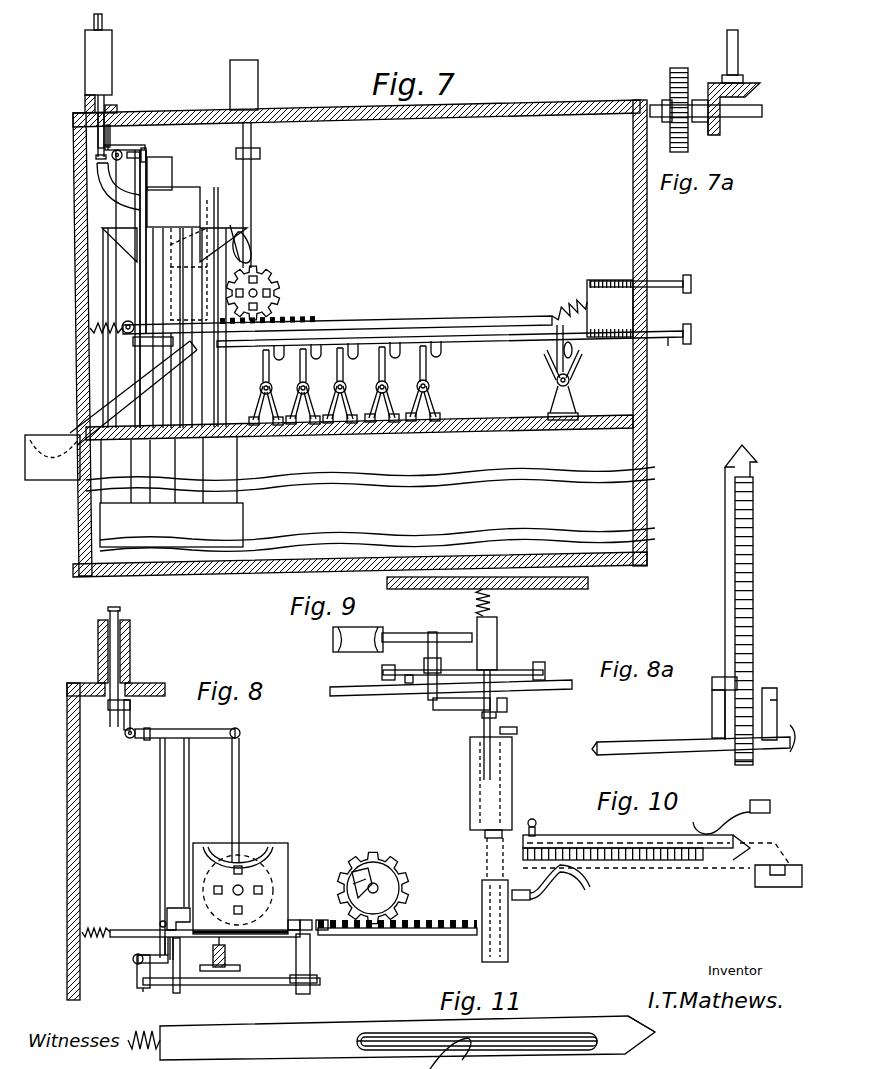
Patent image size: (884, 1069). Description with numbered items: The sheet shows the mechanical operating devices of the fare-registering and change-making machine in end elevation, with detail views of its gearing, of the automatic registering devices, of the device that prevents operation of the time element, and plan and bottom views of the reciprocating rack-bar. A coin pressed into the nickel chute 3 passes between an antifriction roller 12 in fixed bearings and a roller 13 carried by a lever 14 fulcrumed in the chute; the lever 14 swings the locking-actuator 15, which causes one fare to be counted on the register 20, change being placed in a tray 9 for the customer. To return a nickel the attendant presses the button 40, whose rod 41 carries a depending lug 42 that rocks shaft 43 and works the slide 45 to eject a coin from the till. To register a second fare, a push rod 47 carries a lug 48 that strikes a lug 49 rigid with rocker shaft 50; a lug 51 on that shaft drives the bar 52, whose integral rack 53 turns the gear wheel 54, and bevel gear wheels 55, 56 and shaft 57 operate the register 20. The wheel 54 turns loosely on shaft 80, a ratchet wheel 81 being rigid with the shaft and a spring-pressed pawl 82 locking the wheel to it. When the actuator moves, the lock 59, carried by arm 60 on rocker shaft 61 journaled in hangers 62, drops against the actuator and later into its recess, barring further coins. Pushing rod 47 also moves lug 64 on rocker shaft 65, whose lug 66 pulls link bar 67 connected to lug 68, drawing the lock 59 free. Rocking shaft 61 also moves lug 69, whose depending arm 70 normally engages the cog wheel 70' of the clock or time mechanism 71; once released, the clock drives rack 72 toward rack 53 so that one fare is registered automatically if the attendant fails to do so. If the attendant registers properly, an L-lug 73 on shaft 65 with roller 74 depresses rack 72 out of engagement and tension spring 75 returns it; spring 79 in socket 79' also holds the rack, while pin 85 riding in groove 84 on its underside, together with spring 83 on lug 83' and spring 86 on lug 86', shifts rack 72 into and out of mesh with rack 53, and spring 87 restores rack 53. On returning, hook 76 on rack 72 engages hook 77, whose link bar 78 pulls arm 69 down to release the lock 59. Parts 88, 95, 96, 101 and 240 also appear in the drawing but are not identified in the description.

In FIG. 7, the coin receiving chute 3 is at (112, 72).
In FIG. 7, the tray 9 is at (30, 478).
In FIG. 7, the antifriction roller 12 is at (103, 24).
In FIG. 8, the antifriction roller 13 is at (121, 618).
In FIG. 9, the antifriction roller 13 is at (360, 631).
In FIG. 8, the lever 14 is at (100, 648).
In FIG. 7, the locking-actuator 15 is at (105, 128).
In FIG. 8, the locking-actuator 15 is at (103, 686).
In FIG. 9, the locking-actuator 15 is at (415, 632).
In FIG. 7, the register 20 is at (259, 80).
In FIG. 7, the button 40 is at (692, 333).
In FIG. 7, the rod 41 is at (668, 346).
In FIG. 7, the depending lug 42 is at (283, 356).
In FIG. 7, the rocker shaft 43 is at (262, 395).
In FIG. 9, the slide 45 is at (492, 604).
In FIG. 8, the push rod 47 is at (268, 986).
In FIG. 7, the lug 48 is at (573, 349).
In FIG. 7, the lug 49 is at (580, 360).
In FIG. 7, the rocker shaft 50 is at (570, 381).
In FIG. 7, the lug 51 is at (558, 312).
In FIG. 7, the bar 52 is at (442, 335).
In FIG. 7, the rack 53 is at (305, 318).
In FIG. 8, the rack 53 is at (457, 937).
In FIG. 10, the rack 53 is at (770, 888).
In FIG. 7, the gear wheel 54 is at (270, 284).
In FIG. 7A, the gear wheel 54 is at (672, 78).
In FIG. 8, the gear wheel 54 is at (404, 862).
In FIG. 7, the bevel gear wheel 55 is at (276, 293).
In FIG. 7A, the bevel gear wheel 55 is at (714, 136).
In FIG. 7, the bevel gear wheel 56 is at (253, 246).
In FIG. 7A, the bevel gear wheel 56 is at (748, 85).
In FIG. 7, the shaft 57 is at (252, 207).
In FIG. 7A, the shaft 57 is at (739, 52).
In FIG. 7, the lock 59 is at (112, 126).
In FIG. 8, the lock 59 is at (118, 712).
In FIG. 9, the lock 59 is at (427, 657).
In FIG. 7, the arm 60 is at (144, 146).
In FIG. 8, the arm 60 is at (133, 718).
In FIG. 7, the rocker shaft 61 is at (128, 151).
In FIG. 8, the rocker shaft 61 is at (126, 738).
In FIG. 9, the rocker shaft 61 is at (408, 683).
In FIG. 9, the hangers 62 is at (381, 672).
In FIG. 8, the lug 64 is at (137, 973).
In FIG. 8, the rocker shaft 65 is at (133, 959).
In FIG. 9, the rocker shaft 65 is at (352, 696).
In FIG. 8A, the rocker shaft 65 is at (652, 750).
In FIG. 8, the lug 66 is at (142, 988).
In FIG. 8A, the lug 66 is at (793, 752).
In FIG. 7, the link bar 67 is at (135, 167).
In FIG. 8, the link bar 67 is at (159, 839).
In FIG. 8A, the link bar 67 is at (772, 690).
In FIG. 8, the lug 68 is at (150, 740).
In FIG. 9, the lug 68 is at (434, 709).
In FIG. 8, the lug 69 is at (218, 731).
In FIG. 9, the lug 69 is at (486, 720).
In FIG. 7, the depending arm 70 is at (177, 193).
In FIG. 8, the depending arm 70 is at (252, 800).
In FIG. 8, the cog wheel 70' is at (260, 837).
In FIG. 7, the time mechanism 71 is at (255, 228).
In FIG. 8, the time mechanism 71 is at (289, 851).
In FIG. 9, the time mechanism 71 is at (513, 768).
In FIG. 7, the rack 72 is at (88, 331).
In FIG. 8, the rack 72 is at (304, 920).
In FIG. 10, the rack 72 is at (700, 847).
In FIG. 8A, the rack 72 is at (735, 568).
In FIG. 11, the rack 72 is at (626, 1018).
In FIG. 8, the L-lug 73 is at (160, 948).
In FIG. 8A, the L-lug 73 is at (713, 725).
In FIG. 8, the roller 74 is at (165, 960).
In FIG. 8A, the roller 74 is at (726, 677).
In FIG. 8, the tension spring 75 is at (88, 930).
In FIG. 11, the tension spring 75 is at (152, 1030).
In FIG. 8, the lug 76 is at (159, 923).
In FIG. 9, the lug 76 is at (513, 731).
In FIG. 10, the lug 76 is at (537, 826).
In FIG. 8, the hook 77 is at (180, 907).
In FIG. 7, the link bar 78 is at (142, 176).
In FIG. 8, the link bar 78 is at (190, 776).
In FIG. 8, the spring 79 is at (236, 952).
In FIG. 8, the socket 79' is at (235, 974).
In FIG. 7A, the shaft 80 is at (750, 117).
In FIG. 8, the shaft 80 is at (385, 886).
In FIG. 8, the ratchet wheel 81 is at (358, 889).
In FIG. 8, the spring-pressed pawl 82 is at (353, 884).
In FIG. 8, the spring 83 is at (325, 916).
In FIG. 8A, the spring 83 is at (746, 771).
In FIG. 8, the lug 83' is at (314, 964).
In FIG. 10, the lug 83' is at (746, 812).
In FIG. 11, the race 84 is at (590, 1026).
In FIG. 8, the pin 85 is at (240, 938).
In FIG. 9, the spring 86 is at (560, 888).
In FIG. 8, the lug 86' is at (197, 972).
In FIG. 9, the lug 86' is at (525, 910).
In FIG. 7, the spring 87 is at (636, 302).
In FIG. 7, the tube 88 is at (408, 437).
In FIG. 7, the tube 95 is at (360, 437).
In FIG. 7, the tube 96 is at (322, 437).
In FIG. 7, the pivot 101 is at (430, 387).
In FIG. 7, the rod 240 is at (638, 283).